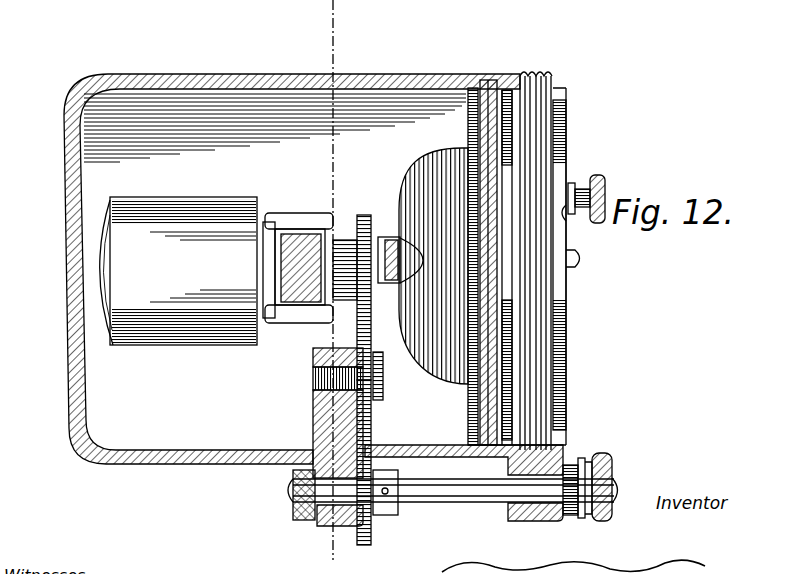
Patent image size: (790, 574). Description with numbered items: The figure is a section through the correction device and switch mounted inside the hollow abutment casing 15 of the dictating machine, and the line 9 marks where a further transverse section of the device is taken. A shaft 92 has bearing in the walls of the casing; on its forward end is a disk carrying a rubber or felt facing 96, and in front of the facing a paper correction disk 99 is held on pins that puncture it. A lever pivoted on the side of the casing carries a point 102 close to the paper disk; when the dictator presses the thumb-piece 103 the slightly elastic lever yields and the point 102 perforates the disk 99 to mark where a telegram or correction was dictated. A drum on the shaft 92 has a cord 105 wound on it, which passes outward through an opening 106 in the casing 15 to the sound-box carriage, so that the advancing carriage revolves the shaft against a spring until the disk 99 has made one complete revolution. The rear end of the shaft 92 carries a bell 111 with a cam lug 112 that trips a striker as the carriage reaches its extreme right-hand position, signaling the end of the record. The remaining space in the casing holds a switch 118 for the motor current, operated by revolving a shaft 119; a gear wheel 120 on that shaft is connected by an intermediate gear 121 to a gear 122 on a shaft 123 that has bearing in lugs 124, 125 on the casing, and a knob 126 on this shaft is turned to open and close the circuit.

The section line 9— 9 is at (341, 35).
The abutment casing 15 is at (382, 80).
The shaft 92 is at (584, 265).
The facing 96 is at (556, 102).
The correction disk 99 is at (567, 148).
The point 102 is at (570, 216).
The thumb-piece 103 is at (600, 194).
The cord 105 is at (476, 100).
The opening 106 is at (490, 100).
The bell 111 is at (447, 163).
The cam lug 112 is at (392, 290).
The switch 118 is at (162, 222).
The shaft 119 is at (350, 233).
The gear wheel 120 is at (378, 200).
The intermediate gear 121 is at (372, 402).
The gear 122 is at (375, 535).
The shaft 123 is at (490, 485).
The lug 124 is at (340, 510).
The lug 125 is at (548, 448).
The knob 126 is at (610, 471).